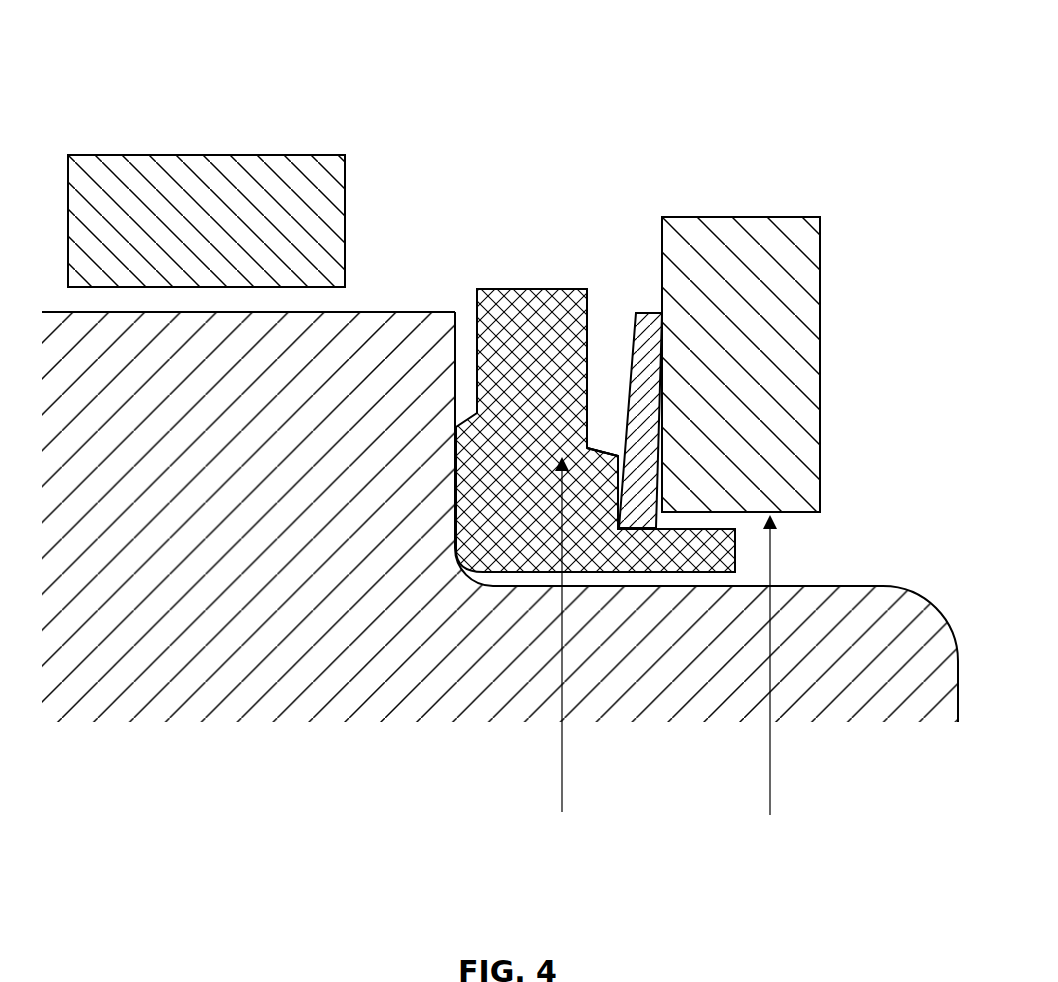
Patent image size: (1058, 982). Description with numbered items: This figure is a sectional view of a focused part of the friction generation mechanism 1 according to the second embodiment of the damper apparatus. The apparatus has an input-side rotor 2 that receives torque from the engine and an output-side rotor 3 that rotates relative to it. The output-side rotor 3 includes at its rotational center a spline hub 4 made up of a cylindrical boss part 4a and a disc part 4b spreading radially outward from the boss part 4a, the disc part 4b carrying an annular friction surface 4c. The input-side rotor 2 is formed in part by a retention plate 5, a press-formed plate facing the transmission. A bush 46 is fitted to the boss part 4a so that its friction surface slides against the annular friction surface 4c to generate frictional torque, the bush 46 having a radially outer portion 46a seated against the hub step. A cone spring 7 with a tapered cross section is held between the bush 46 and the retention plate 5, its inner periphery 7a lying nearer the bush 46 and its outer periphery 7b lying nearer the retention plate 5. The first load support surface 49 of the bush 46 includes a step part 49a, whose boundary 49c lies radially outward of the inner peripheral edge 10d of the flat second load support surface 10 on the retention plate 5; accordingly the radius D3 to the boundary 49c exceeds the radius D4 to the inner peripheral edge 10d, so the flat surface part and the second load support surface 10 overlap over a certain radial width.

The friction generation mechanism 1 is at (522, 411).
The input-side rotor 2 is at (772, 429).
The output-side rotor 3 is at (144, 753).
The spline hub 4 is at (280, 660).
The boss part 4a is at (835, 683).
The disc part 4b is at (340, 338).
The annular friction surface 4c is at (458, 503).
The retention plate 5 is at (780, 287).
The cone spring 7 is at (632, 372).
The inner periphery 7a is at (628, 532).
The outer periphery 7b is at (640, 313).
The second load support surface 10 is at (661, 275).
The inner peripheral edge 10d is at (648, 530).
The bush 46 is at (521, 289).
The outer peripheral portion of seal member 46a is at (454, 500).
The first load support surface 49 is at (607, 454).
The step part 49a is at (588, 302).
The boundary 49c is at (617, 447).
The radius D3 is at (545, 638).
The radius D4 is at (753, 668).